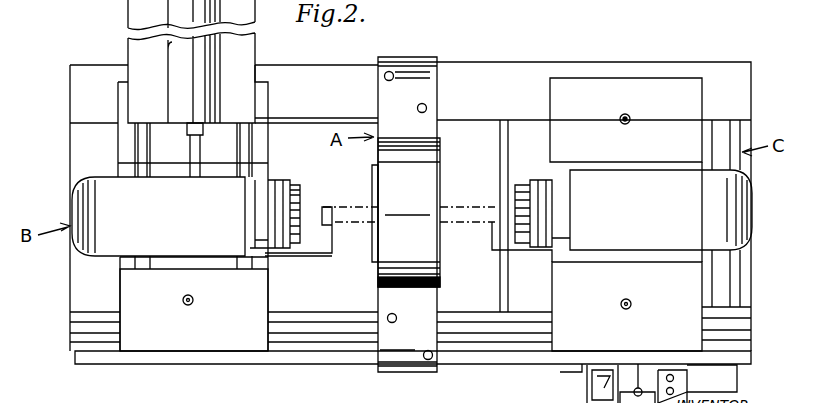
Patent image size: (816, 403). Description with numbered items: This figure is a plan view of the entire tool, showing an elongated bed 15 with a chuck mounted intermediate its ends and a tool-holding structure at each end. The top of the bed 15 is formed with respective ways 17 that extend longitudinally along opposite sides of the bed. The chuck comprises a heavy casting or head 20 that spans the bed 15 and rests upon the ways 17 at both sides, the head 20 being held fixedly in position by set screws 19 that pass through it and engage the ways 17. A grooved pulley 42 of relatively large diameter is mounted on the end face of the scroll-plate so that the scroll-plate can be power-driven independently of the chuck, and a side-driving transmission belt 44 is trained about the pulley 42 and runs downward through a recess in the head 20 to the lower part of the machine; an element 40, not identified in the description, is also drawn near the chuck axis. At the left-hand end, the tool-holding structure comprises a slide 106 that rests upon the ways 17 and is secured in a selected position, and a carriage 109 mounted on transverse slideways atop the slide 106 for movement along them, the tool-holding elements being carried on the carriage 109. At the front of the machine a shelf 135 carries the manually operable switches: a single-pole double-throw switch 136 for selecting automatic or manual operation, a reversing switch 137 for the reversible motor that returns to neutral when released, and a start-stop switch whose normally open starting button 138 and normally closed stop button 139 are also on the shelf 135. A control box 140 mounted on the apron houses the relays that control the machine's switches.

The bed 15 is at (70, 150).
The ways 17 is at (477, 68).
The set screws 19 is at (389, 71).
The head 20 is at (404, 340).
The shaft 40 is at (474, 207).
The grooved pulley 42 is at (376, 176).
The side-driving transmission belt 44 is at (376, 262).
The slide 106 is at (156, 345).
The carriage 109 is at (268, 180).
The shelf 135 is at (570, 383).
The single-pole double-throw switch 136 is at (597, 378).
The reversing switch 137 is at (635, 388).
The starting button 138 is at (675, 378).
The stop button 139 is at (675, 391).
The control box 140 is at (737, 388).